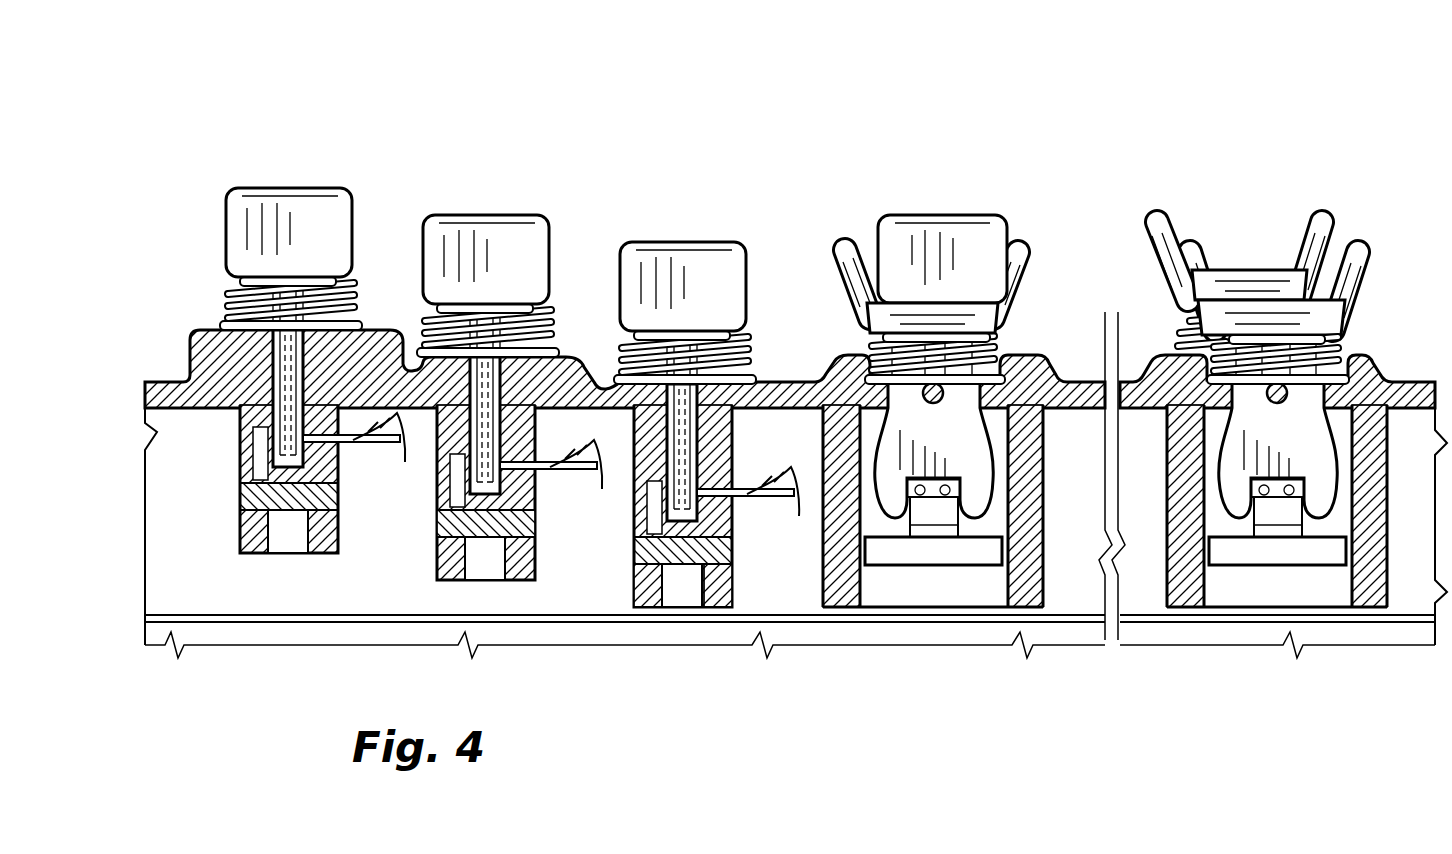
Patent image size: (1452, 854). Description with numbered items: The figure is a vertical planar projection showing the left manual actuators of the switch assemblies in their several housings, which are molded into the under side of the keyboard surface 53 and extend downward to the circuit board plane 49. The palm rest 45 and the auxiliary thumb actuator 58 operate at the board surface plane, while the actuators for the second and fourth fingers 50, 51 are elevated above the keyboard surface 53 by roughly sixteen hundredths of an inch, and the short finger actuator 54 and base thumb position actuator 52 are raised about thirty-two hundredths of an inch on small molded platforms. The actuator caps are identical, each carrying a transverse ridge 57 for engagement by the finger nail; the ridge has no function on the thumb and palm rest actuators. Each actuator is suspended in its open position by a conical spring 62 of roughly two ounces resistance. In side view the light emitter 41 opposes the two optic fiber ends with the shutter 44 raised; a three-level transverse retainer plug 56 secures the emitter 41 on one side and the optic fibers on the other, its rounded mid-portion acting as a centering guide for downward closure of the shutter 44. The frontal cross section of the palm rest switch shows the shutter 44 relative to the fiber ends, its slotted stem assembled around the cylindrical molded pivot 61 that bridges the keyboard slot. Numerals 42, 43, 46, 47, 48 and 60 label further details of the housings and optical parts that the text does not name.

The light emitter 41 is at (258, 452).
The contact rod 42 is at (356, 444).
The contact spring 43 is at (385, 445).
The shutter 44 is at (995, 497).
The palm rest 45 is at (1025, 252).
The base block 46 is at (648, 590).
The housing wall 47 is at (838, 585).
The housing wall 48 is at (1172, 580).
The circuit board plane 49 is at (1415, 613).
The second finger actuator 50 is at (1000, 218).
The fourth finger actuator 51 is at (510, 216).
The base thumb position actuator 52 is at (1153, 212).
The keyboard surface 53 is at (165, 380).
The short finger actuator 54 is at (314, 200).
The retainer plug 56 is at (447, 518).
The transverse ridge 57 is at (905, 298).
The auxiliary thumb actuator 58 is at (1363, 250).
The coil spring 60 is at (1352, 348).
The cylindrical molded pivot 61 is at (1185, 332).
The conical spring 62 is at (226, 310).